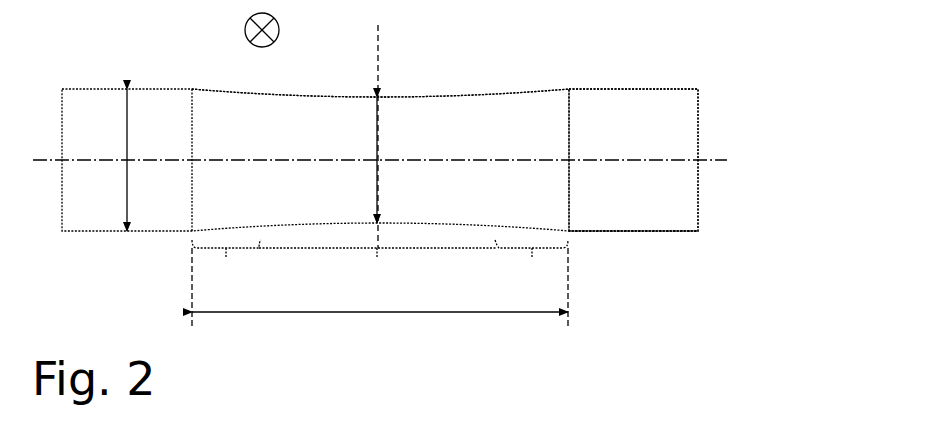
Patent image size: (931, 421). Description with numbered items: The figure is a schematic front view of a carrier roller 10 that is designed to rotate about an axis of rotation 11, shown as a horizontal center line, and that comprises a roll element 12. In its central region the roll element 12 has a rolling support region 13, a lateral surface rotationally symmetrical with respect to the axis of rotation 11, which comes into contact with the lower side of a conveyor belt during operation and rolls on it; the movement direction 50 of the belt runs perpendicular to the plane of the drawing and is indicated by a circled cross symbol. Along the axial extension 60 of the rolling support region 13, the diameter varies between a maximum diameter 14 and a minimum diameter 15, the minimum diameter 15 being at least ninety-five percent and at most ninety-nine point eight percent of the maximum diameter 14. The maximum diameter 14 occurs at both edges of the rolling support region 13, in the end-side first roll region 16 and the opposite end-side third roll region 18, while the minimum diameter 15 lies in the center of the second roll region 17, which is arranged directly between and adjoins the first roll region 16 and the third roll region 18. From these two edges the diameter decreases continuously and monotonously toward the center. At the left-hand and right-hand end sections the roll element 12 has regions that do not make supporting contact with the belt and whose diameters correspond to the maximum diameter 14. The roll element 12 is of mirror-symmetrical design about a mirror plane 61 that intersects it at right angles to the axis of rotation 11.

The carrier roller 10 is at (655, 72).
The axis of rotation 11 is at (698, 160).
The roll element 12 is at (624, 195).
The rolling support region 13 is at (507, 90).
The maximum diameter 14 is at (102, 160).
The minimum diameter 15 is at (402, 160).
The first roll region 16 is at (531, 268).
The second roll region 17 is at (378, 272).
The third roll region 18 is at (226, 268).
The movement direction 50 is at (241, 32).
The axial extension 60 is at (380, 303).
The mirror plane 61 is at (402, 136).